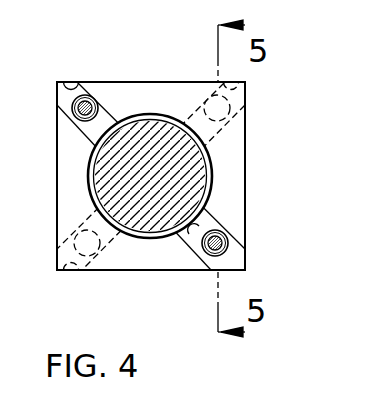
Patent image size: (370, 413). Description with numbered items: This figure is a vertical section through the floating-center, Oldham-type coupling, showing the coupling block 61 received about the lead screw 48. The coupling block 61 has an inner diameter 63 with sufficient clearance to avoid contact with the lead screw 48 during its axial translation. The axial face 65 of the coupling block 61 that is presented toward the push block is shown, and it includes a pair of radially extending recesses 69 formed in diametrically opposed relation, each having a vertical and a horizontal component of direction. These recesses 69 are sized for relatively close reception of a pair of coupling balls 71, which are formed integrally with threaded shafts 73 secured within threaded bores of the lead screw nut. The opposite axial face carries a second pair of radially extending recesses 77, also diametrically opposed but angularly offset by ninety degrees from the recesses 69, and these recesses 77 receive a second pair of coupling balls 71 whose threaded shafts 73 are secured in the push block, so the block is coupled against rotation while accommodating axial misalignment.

The lead screw 48 is at (113, 177).
The coupling block 61 is at (245, 183).
The inner diameter 63 is at (213, 168).
The axial face 65 is at (141, 82).
The radially extending recesses 69 is at (66, 80).
The coupling balls 71 is at (75, 117).
The threaded shafts 73 is at (225, 234).
The radially extending recesses 77 is at (245, 83).